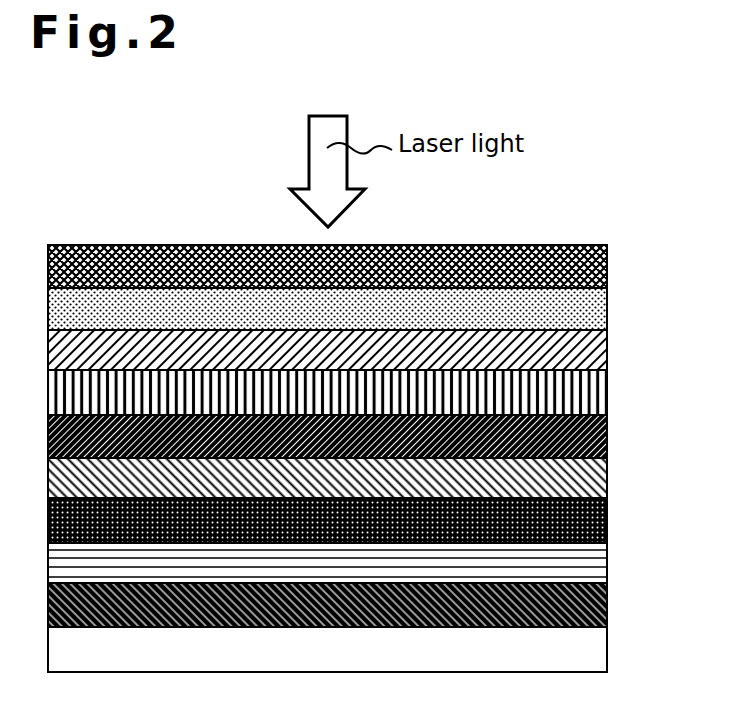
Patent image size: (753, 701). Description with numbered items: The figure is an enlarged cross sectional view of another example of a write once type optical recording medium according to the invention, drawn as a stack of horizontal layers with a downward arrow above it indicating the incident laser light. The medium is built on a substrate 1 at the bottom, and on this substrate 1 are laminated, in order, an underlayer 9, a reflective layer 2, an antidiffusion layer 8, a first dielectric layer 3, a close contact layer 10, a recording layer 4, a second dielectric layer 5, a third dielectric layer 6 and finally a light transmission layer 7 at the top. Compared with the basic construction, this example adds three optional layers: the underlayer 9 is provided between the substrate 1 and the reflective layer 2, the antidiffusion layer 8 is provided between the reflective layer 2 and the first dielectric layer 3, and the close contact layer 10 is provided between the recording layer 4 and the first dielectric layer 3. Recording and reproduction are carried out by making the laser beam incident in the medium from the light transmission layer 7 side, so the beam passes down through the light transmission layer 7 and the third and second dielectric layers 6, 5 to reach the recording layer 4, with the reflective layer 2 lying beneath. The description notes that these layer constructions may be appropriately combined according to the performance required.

The substrate 1 is at (585, 650).
The reflective layer 2 is at (607, 560).
The first dielectric layer 3 is at (607, 473).
The recording layer 4 is at (585, 392).
The second dielectric layer 5 is at (590, 350).
The third dielectric layer 6 is at (585, 308).
The light transmission layer 7 is at (607, 265).
The antidiffusion layer 8 is at (607, 518).
The underlayer 9 is at (607, 605).
The close contact layer 10 is at (607, 433).